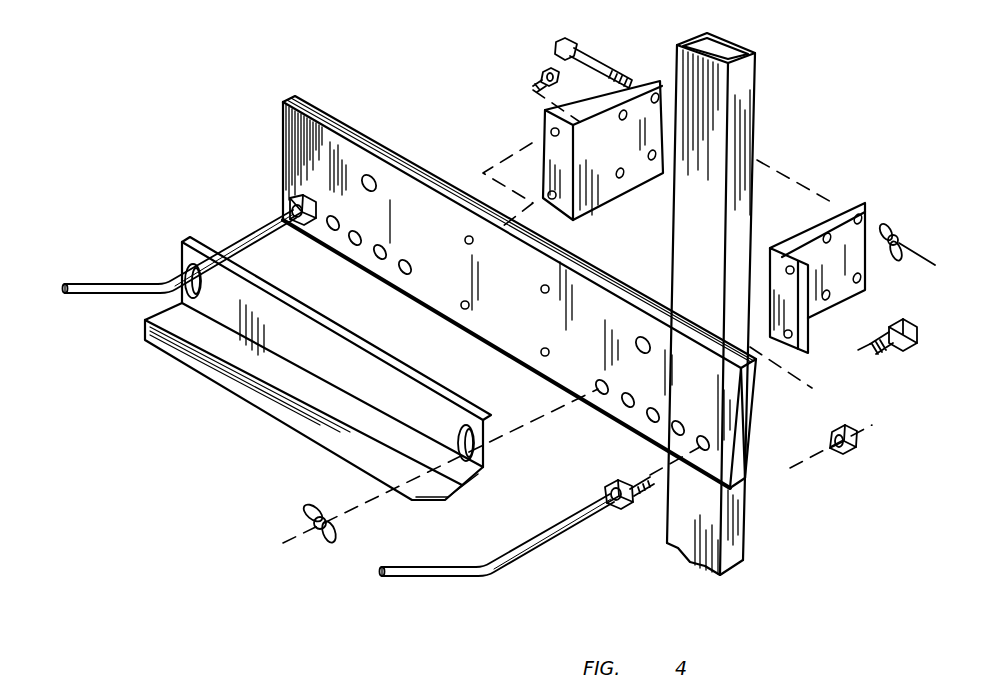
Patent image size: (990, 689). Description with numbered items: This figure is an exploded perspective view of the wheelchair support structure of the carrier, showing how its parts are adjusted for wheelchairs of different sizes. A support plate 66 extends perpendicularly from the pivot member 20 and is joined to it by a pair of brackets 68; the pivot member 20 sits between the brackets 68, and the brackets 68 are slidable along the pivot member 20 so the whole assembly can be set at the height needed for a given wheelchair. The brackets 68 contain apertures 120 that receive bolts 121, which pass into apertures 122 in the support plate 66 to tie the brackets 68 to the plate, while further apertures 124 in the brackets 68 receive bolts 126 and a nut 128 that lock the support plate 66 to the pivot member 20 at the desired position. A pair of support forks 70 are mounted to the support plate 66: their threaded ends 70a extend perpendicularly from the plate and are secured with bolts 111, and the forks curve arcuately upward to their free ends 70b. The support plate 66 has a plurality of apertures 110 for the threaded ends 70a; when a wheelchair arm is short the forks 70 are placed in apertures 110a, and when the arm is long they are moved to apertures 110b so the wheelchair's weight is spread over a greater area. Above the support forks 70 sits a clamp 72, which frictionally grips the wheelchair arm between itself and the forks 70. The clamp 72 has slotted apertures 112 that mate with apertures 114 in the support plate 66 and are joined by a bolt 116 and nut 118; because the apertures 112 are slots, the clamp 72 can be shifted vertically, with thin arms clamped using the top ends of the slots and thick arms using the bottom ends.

The pivot member 20 is at (712, 276).
The support plate 66 is at (302, 108).
The brackets 68 is at (614, 162).
The support forks 70 is at (240, 240).
The threaded ends of support forks 70a is at (289, 207).
The ends of support forks 70b is at (65, 295).
The clamp 72 is at (318, 357).
The apertures 110 is at (355, 246).
The apertures 110a is at (405, 275).
The apertures 110b is at (294, 198).
The bolts 111 is at (858, 442).
The slotted apertures 112 is at (203, 290).
The apertures 114 is at (362, 178).
The bolt 116 is at (918, 340).
The nut 118 is at (326, 542).
The apertures 120 is at (550, 132).
The bolts 121 is at (545, 70).
The apertures 122 is at (462, 243).
The apertures 124 is at (655, 93).
The bolts 126 is at (597, 62).
The nut 128 is at (899, 236).